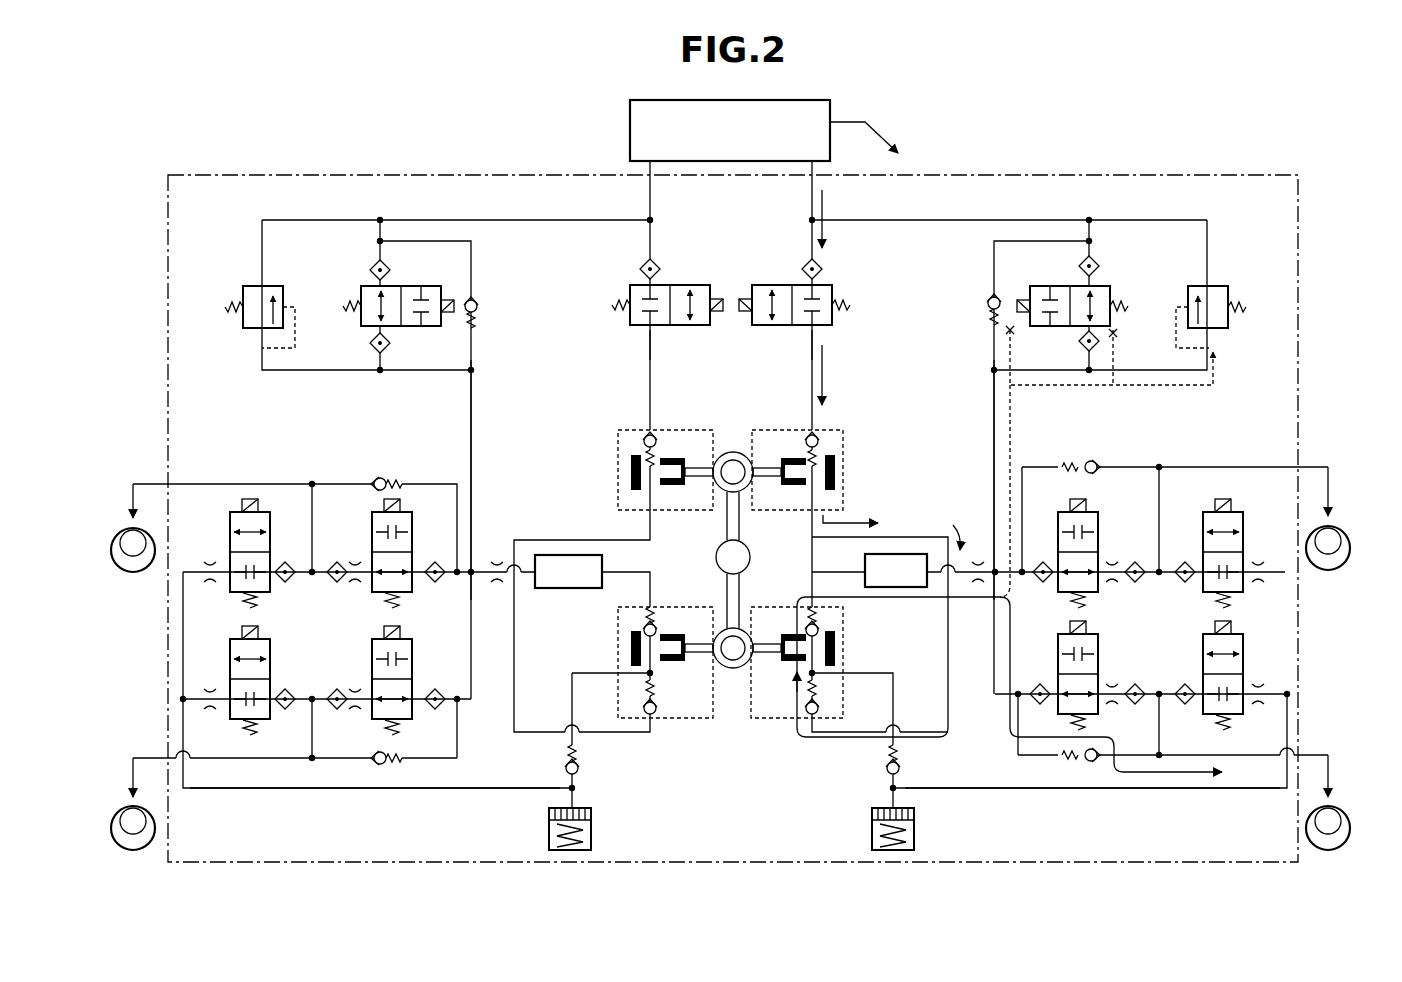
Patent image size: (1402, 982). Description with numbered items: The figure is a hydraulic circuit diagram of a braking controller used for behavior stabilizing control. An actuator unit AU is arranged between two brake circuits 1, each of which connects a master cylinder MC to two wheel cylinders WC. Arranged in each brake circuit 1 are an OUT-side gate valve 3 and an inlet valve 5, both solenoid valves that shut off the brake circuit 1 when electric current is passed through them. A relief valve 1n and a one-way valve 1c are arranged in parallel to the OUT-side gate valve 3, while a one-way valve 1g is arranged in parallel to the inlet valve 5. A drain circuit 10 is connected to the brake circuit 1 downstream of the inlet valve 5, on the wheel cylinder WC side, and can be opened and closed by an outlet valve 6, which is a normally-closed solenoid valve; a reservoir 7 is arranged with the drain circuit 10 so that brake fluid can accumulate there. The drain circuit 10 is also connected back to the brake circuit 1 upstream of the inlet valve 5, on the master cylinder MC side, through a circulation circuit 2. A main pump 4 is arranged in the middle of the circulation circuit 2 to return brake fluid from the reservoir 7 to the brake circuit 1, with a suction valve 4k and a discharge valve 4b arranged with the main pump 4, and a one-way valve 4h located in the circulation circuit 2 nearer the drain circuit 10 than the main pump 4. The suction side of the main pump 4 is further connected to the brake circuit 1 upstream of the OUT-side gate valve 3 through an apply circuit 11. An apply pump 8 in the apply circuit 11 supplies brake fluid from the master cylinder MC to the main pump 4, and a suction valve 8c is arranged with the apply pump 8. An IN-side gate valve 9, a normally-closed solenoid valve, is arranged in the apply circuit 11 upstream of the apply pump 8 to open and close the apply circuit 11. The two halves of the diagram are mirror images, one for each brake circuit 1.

The brake circuit 1 is at (471, 423).
The one-way valve 1c is at (478, 326).
The one-way valve 1g is at (375, 481).
The relief valve 1n is at (243, 290).
The circulation circuit 2 is at (652, 583).
The OUT-side gate valve 3 is at (361, 285).
The main pump 4 is at (733, 672).
The discharge valve 4b is at (647, 612).
The one-way valve 4h is at (580, 773).
The suction valve 4k is at (653, 716).
The inlet valve 5 is at (372, 649).
The outlet valve 6 is at (230, 649).
The reservoir 7 is at (549, 832).
The apply pump 8 is at (733, 436).
The suction valve 8c is at (646, 437).
The IN-side gate valve 9 is at (690, 285).
The drain circuit 10 is at (425, 790).
The apply circuit 11 is at (650, 356).
The master cylinder MC is at (630, 128).
The actuator unit AU is at (1148, 173).
The wheel cylinder WC is at (133, 573).